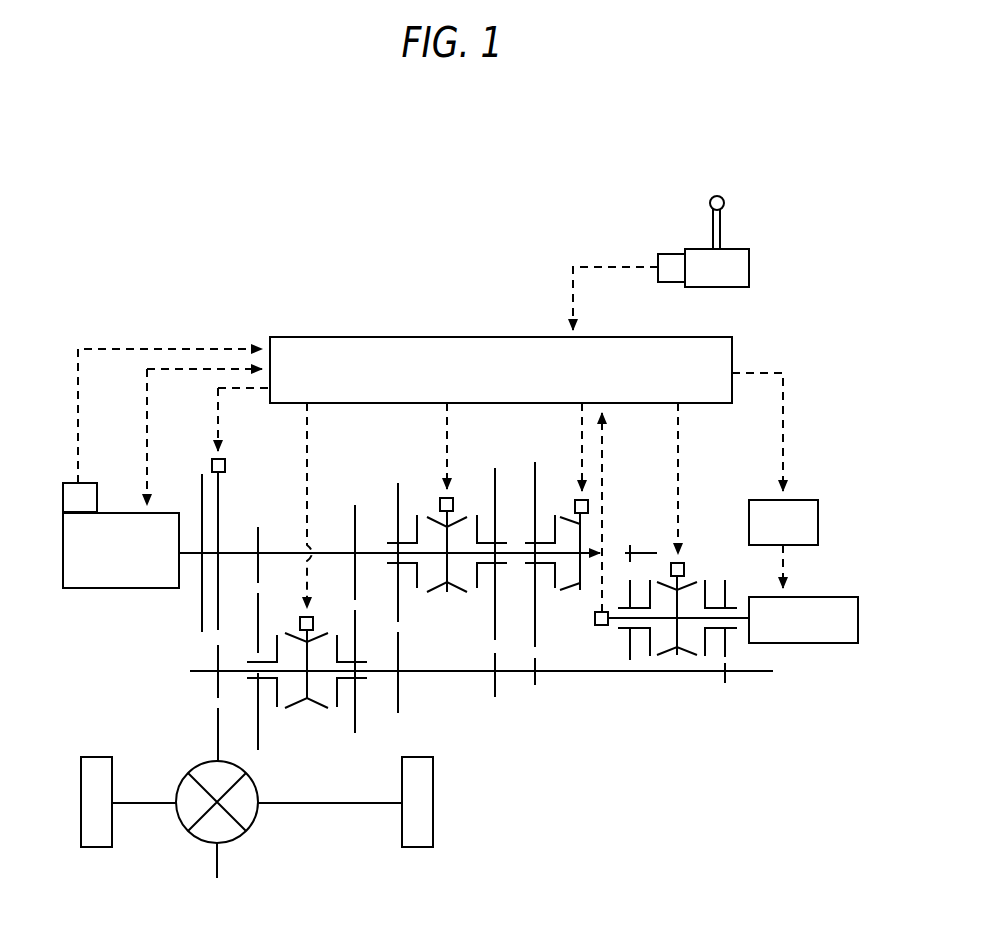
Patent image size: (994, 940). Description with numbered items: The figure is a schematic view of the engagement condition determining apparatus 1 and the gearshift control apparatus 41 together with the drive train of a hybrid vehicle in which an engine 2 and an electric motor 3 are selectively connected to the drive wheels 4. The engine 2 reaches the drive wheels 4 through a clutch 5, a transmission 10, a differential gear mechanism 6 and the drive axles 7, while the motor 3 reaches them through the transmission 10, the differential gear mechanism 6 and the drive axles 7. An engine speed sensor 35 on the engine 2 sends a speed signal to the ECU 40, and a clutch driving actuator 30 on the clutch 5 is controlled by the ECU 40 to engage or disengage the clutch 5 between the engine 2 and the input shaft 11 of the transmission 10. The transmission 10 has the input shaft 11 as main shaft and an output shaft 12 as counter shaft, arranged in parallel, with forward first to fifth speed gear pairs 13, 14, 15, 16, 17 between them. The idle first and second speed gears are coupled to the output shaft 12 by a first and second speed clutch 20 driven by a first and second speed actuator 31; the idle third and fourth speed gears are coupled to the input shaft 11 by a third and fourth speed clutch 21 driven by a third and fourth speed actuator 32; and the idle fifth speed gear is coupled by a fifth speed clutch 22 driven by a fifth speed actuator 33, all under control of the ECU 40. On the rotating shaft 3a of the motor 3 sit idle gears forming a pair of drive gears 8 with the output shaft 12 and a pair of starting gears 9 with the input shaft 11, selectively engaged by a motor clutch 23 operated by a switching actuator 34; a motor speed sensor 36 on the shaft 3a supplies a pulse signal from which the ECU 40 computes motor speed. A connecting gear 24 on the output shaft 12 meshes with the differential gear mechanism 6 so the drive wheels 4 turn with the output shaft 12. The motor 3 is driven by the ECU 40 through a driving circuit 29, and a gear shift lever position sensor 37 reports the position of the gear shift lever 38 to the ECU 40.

The engagement condition determining apparatus 1 is at (472, 231).
The engine 2 is at (88, 590).
The electric motor 3 is at (850, 597).
The rotating shaft 3a is at (738, 624).
The drive wheels 4 is at (98, 849).
The clutch 5 is at (218, 622).
The differential gear mechanism 6 is at (228, 840).
The drive axles 7 is at (152, 806).
The pair of drive gears 8 is at (725, 683).
The pair of starting gears 9 is at (628, 660).
The transmission 10 is at (598, 820).
The input shaft 11 is at (650, 553).
The output shaft 12 is at (773, 673).
The forward first speed gear pair 13 is at (258, 527).
The forward second speed gear pair 14 is at (355, 505).
The forward third speed gear pair 15 is at (398, 483).
The forward fourth speed gear pair 16 is at (495, 697).
The forward fifth speed gear pair 17 is at (535, 688).
The first and second speed clutch 20 is at (297, 710).
The third and fourth speed clutch 21 is at (460, 594).
The fifth speed clutch 22 is at (575, 591).
The motor clutch 23 is at (690, 657).
The connecting gear 24 is at (216, 686).
The driving circuit 29 is at (805, 500).
The clutch driving actuator 30 is at (225, 462).
The first and second speed actuator 31 is at (313, 617).
The third and fourth speed actuator 32 is at (453, 498).
The fifth speed actuator 33 is at (577, 500).
The switching actuator 34 is at (684, 563).
The engine speed sensor 35 is at (68, 483).
The motor speed sensor 36 is at (598, 625).
The gear shift lever position sensor 37 is at (671, 254).
The gear shift lever 38 is at (721, 234).
The ECU 40 is at (425, 338).
The gearshift control apparatus 41 is at (397, 172).